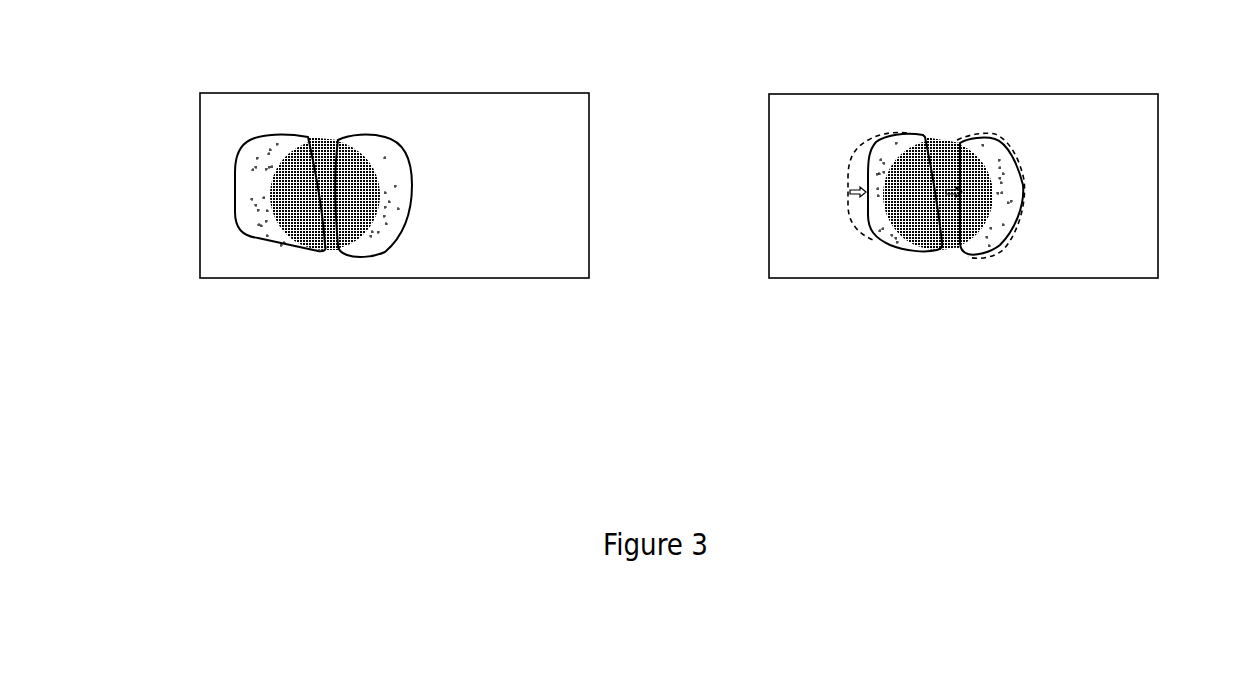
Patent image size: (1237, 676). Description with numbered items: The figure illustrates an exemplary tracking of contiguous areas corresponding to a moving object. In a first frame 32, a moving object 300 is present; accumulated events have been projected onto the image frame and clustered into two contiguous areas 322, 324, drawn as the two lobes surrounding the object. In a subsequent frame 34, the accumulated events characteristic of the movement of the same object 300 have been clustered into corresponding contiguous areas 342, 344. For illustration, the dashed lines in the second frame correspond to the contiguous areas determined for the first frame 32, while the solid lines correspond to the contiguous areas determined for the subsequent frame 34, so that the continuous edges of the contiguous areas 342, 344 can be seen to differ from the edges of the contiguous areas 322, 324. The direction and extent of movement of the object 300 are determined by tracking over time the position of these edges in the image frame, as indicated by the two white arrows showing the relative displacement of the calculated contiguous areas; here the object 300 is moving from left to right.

The moving object 300 is at (327, 137).
The first frame 32 is at (394, 206).
The contiguous area 322 is at (233, 204).
The contiguous area 324 is at (347, 256).
The subsequent frame 34 is at (963, 209).
The contiguous area 342 is at (920, 133).
The contiguous area 344 is at (1018, 218).